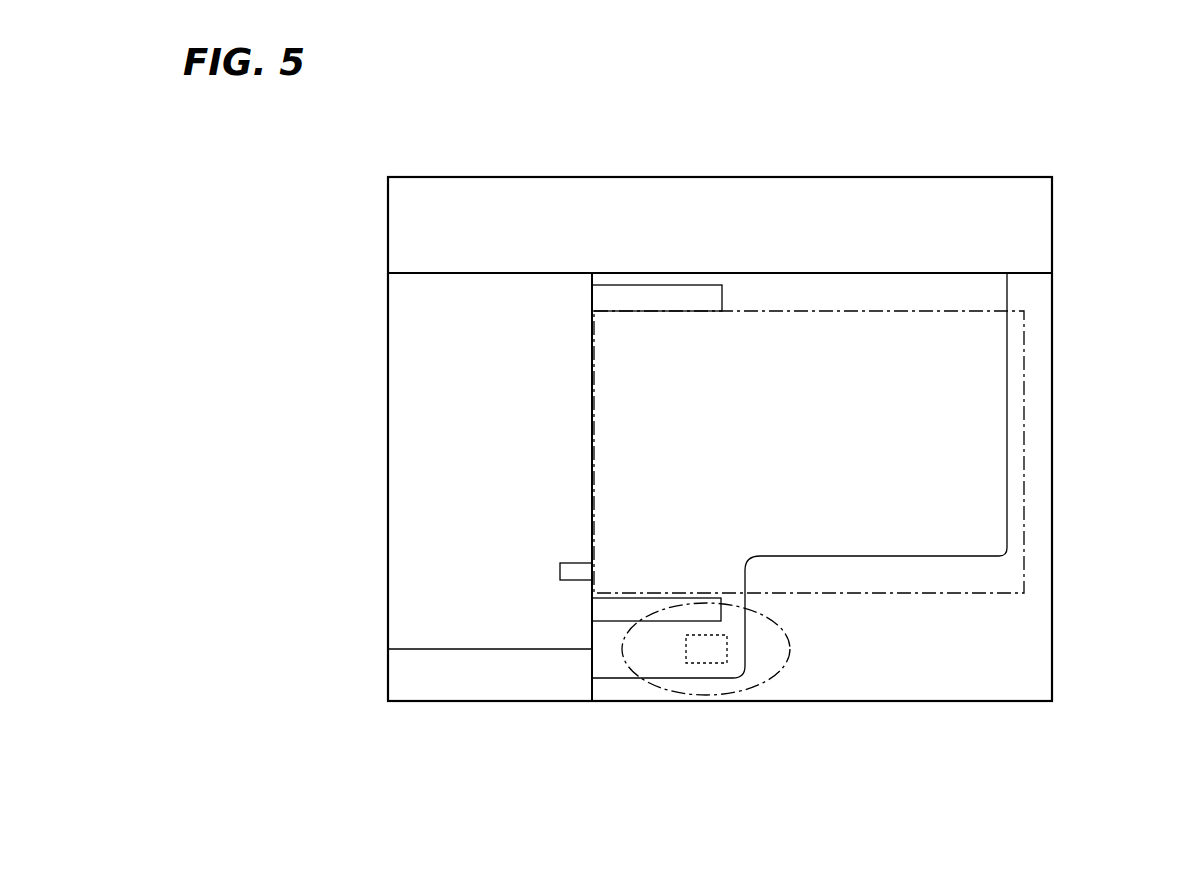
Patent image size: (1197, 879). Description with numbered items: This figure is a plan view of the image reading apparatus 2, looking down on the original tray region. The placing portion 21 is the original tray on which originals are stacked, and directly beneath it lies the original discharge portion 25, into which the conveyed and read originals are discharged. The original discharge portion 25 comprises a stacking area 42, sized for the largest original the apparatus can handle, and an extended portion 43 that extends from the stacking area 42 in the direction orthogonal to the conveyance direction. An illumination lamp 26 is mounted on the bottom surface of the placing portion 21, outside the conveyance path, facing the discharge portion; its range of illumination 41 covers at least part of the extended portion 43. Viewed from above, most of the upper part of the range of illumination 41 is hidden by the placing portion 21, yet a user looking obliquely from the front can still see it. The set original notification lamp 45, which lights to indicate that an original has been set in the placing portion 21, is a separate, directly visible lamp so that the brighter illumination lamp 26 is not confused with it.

The image reading apparatus 2 is at (751, 168).
The placing portion 21 is at (973, 484).
The original discharge portion 25 is at (955, 575).
The illumination lamp 26 is at (703, 655).
The range of illumination 41 is at (768, 678).
The stacking area 42 is at (1025, 369).
The extended portion 43 is at (837, 658).
The set original notification lamp 45 is at (570, 575).